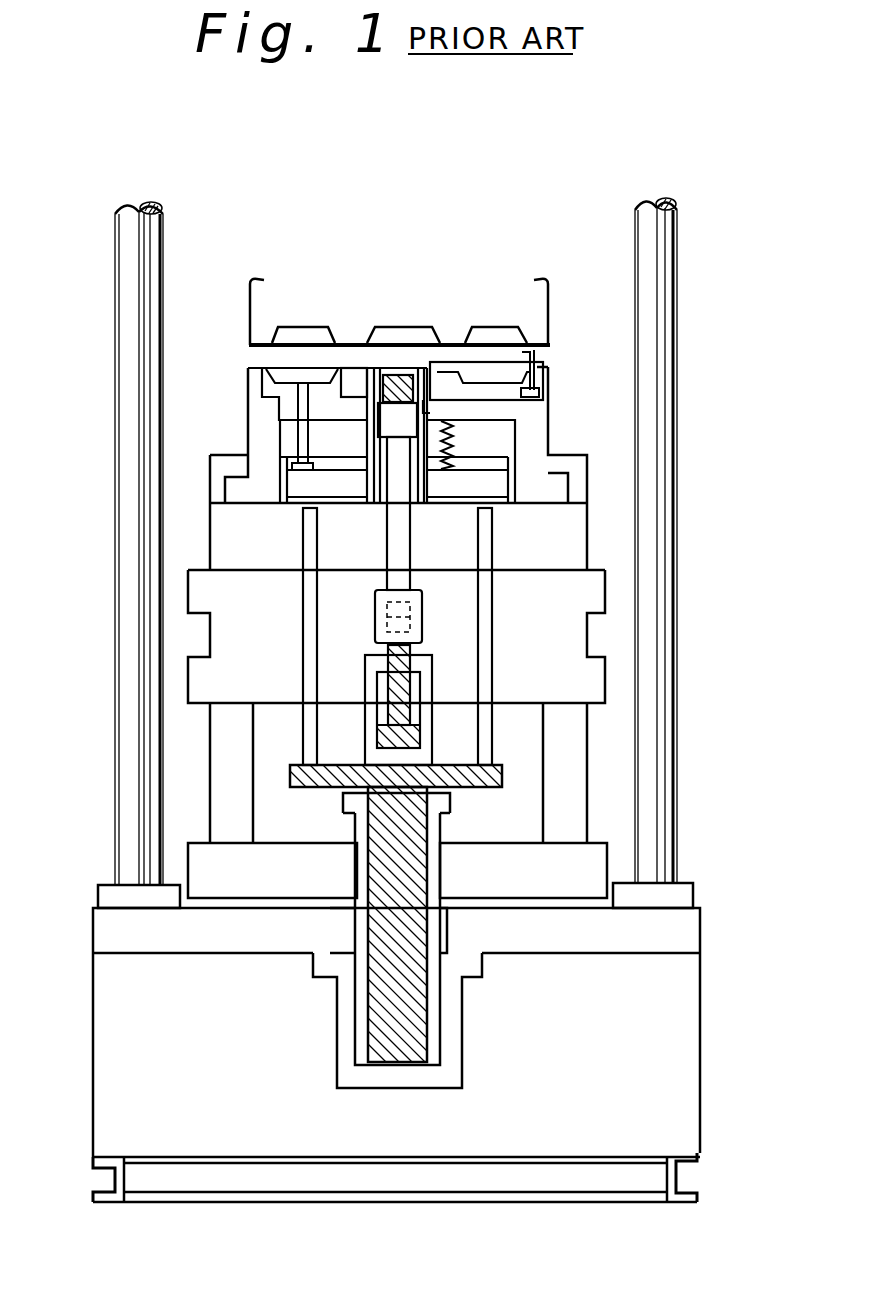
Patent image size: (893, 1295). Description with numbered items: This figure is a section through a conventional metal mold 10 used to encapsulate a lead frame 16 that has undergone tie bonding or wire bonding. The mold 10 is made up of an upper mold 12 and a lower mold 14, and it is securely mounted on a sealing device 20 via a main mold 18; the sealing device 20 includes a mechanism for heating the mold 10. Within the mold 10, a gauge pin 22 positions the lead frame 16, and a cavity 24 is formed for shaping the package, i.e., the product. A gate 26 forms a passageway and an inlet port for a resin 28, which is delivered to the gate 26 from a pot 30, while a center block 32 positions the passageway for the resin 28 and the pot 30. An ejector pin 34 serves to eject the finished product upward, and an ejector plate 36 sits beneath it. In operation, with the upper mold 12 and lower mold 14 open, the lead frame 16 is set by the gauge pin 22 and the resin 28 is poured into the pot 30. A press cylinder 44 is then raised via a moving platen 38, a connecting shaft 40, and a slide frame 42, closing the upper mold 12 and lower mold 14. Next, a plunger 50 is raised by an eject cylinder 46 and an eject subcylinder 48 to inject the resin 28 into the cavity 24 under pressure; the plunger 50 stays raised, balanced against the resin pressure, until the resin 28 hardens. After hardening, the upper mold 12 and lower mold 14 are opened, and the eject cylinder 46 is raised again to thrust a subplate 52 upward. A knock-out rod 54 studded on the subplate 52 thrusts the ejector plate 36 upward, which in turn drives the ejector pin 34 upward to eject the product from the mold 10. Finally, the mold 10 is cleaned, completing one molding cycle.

The mold 10 is at (568, 246).
The upper mold 12 is at (532, 308).
The lower mold 14 is at (553, 490).
The lead frame 16 is at (534, 358).
The main mold 18 is at (568, 555).
The sealing device 20 is at (628, 1112).
The gauge pin 22 is at (540, 393).
The cavity 24 is at (263, 372).
The gate 26 is at (352, 367).
The resin 28 is at (394, 375).
The pot 30 is at (428, 364).
The center block 32 is at (445, 378).
The ejector pin 34 is at (296, 405).
The ejector plate 36 is at (300, 480).
The moving platen 38 is at (218, 593).
The connecting shaft 40 is at (227, 785).
The slide frame 42 is at (213, 870).
The press cylinder 44 is at (452, 1027).
The eject cylinder 46 is at (433, 868).
The eject subcylinder 48 is at (425, 750).
The plunger 50 is at (400, 425).
The subplate 52 is at (290, 767).
The knock-out rod 54 is at (485, 638).